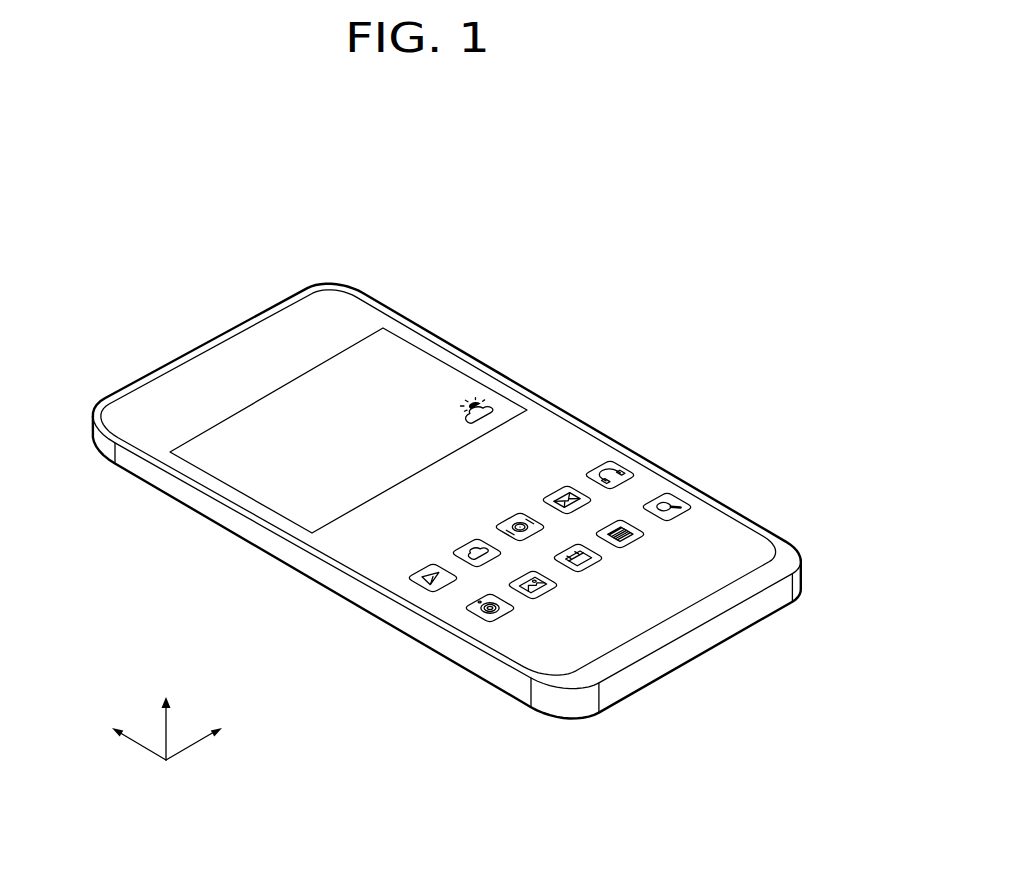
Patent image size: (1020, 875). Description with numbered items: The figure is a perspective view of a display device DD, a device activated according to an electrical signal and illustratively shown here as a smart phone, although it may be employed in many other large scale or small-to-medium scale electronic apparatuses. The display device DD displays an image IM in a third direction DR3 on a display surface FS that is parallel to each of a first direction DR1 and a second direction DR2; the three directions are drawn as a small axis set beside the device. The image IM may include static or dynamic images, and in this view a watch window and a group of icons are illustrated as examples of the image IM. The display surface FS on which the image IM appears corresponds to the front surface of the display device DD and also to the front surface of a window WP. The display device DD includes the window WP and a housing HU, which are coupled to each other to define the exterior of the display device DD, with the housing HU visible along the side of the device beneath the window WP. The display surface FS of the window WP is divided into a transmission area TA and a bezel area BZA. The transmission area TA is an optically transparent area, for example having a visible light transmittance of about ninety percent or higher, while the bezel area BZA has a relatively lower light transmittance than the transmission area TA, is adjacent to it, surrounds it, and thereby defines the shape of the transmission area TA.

The display device DD is at (638, 284).
The display surface FS is at (253, 215).
The window WP is at (215, 495).
The bezel area BZA is at (283, 301).
The transmission area TA is at (223, 363).
The housing HU is at (283, 547).
The image IM is at (453, 368).
The first direction DR1 is at (214, 737).
The second direction DR2 is at (116, 737).
The third direction DR3 is at (166, 716).